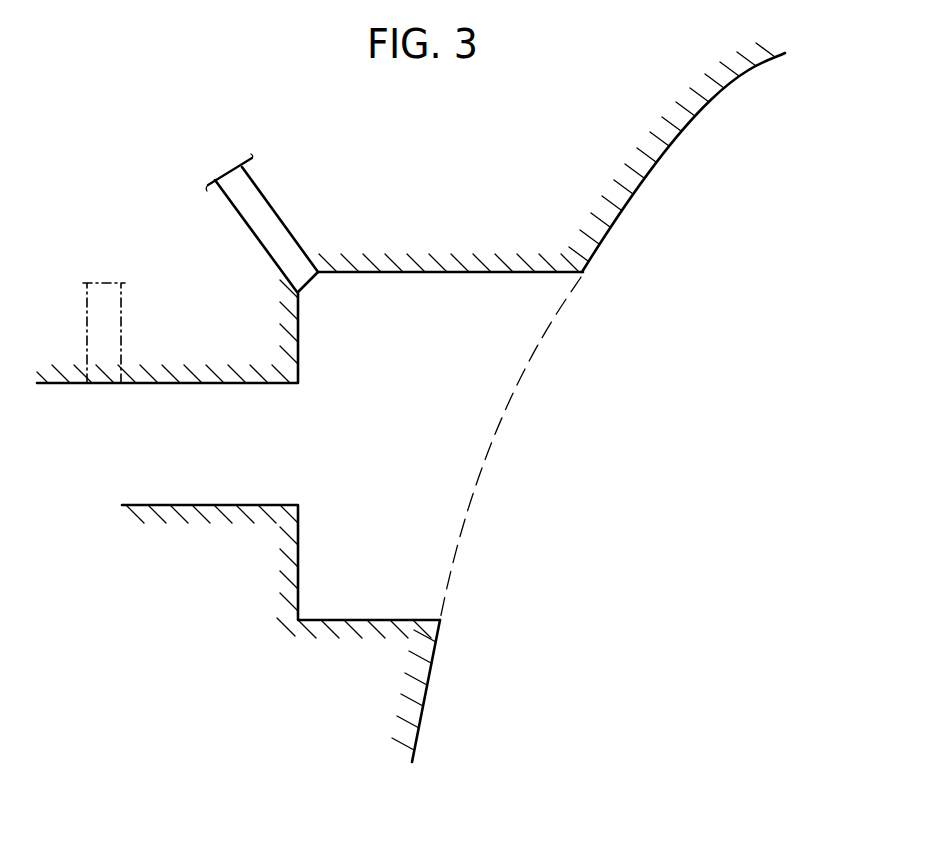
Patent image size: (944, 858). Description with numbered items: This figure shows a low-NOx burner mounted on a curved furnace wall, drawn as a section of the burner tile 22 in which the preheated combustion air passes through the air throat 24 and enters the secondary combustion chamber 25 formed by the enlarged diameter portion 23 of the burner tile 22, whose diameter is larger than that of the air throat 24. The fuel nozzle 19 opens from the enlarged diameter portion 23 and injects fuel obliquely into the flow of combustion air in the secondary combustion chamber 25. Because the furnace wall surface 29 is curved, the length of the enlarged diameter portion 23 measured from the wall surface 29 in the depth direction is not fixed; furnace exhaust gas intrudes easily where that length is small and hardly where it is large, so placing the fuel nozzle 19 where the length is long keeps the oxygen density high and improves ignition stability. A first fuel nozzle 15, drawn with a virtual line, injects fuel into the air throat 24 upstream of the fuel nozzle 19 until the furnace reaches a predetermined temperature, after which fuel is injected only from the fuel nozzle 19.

The first fuel nozzle 15 is at (118, 313).
The fuel nozzle 19 is at (260, 207).
The burner tile 22 is at (532, 253).
The enlarged diameter portion 23 is at (333, 277).
The air throat 24 is at (206, 458).
The secondary combustion chamber 25 is at (450, 385).
The wall surface 29 is at (616, 241).